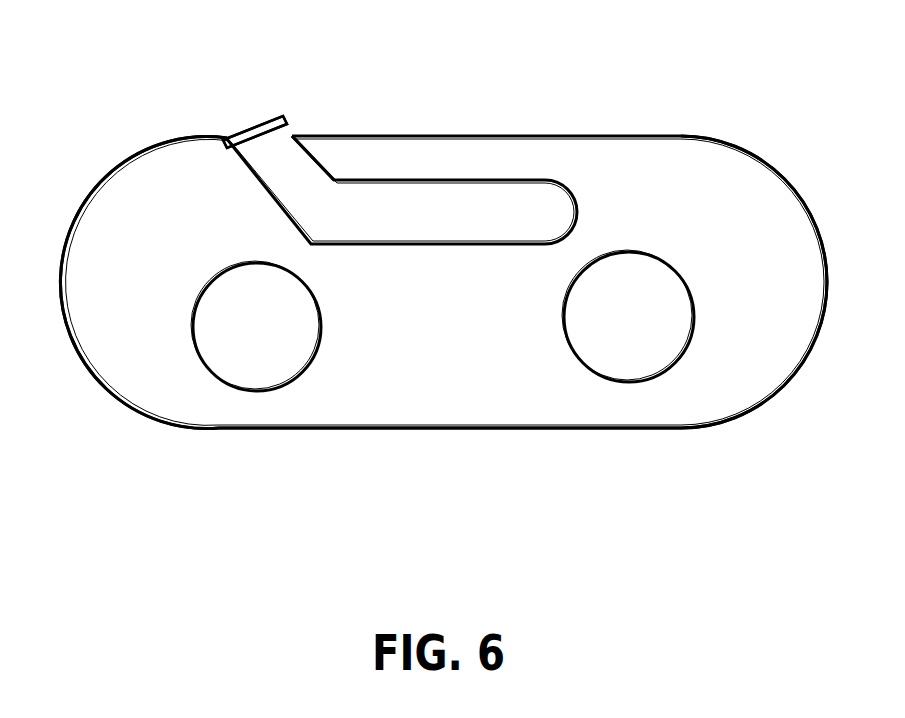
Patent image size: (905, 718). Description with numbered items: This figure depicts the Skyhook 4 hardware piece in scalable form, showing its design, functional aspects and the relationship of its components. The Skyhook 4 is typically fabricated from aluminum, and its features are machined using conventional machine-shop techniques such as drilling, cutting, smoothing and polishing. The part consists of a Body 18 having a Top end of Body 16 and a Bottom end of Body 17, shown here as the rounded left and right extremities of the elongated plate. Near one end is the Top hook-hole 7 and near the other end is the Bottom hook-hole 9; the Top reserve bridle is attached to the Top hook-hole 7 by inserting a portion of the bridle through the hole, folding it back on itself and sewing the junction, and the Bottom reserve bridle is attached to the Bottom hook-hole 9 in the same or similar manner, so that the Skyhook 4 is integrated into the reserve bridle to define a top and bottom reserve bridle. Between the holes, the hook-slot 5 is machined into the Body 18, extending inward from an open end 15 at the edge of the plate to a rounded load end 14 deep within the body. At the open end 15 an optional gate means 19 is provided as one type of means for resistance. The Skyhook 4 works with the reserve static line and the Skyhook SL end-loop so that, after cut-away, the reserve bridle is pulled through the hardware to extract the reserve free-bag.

The Skyhook 4 is at (64, 256).
The hook-slot 5 is at (265, 147).
The Top hook-hole 7 is at (313, 378).
The Bottom hook-hole 9 is at (595, 381).
The load end 14 is at (571, 207).
The open end 15 is at (297, 127).
The Top end of Body 16 is at (798, 188).
The Bottom end of Body 17 is at (77, 334).
The Body 18 is at (475, 431).
The gate means 19 is at (263, 110).